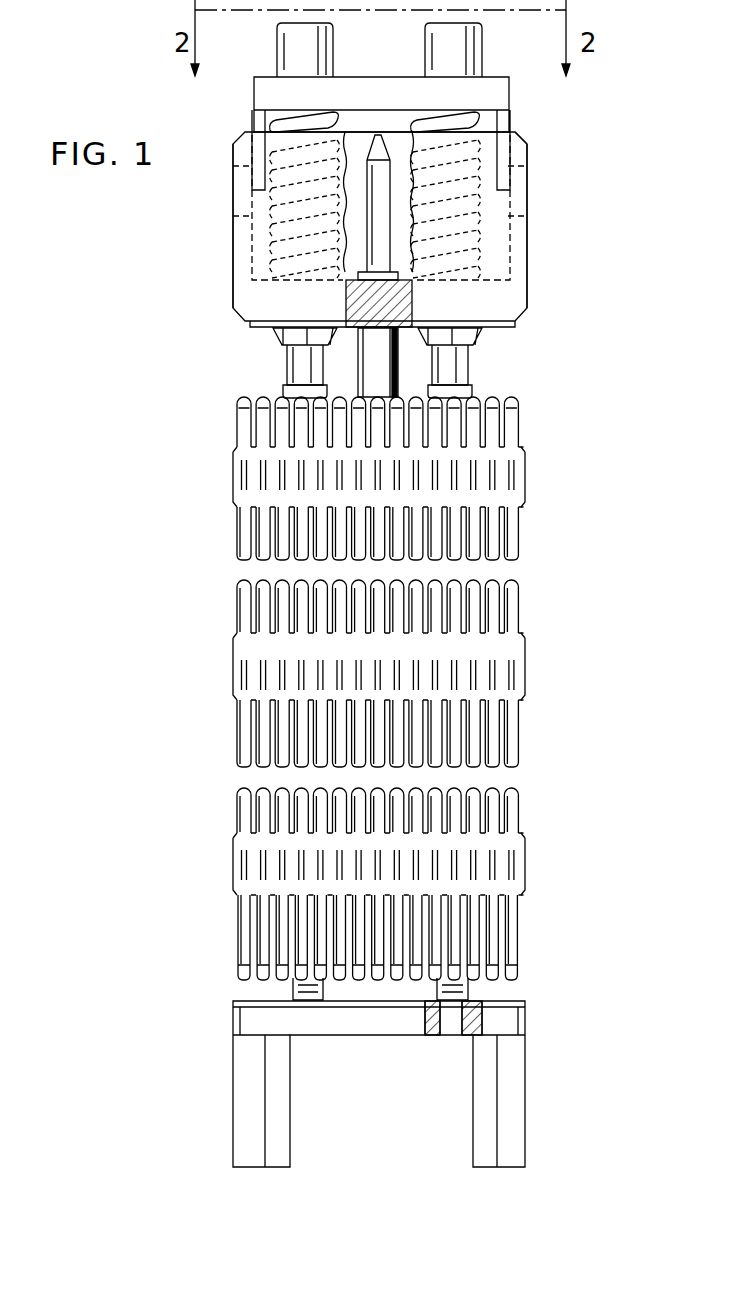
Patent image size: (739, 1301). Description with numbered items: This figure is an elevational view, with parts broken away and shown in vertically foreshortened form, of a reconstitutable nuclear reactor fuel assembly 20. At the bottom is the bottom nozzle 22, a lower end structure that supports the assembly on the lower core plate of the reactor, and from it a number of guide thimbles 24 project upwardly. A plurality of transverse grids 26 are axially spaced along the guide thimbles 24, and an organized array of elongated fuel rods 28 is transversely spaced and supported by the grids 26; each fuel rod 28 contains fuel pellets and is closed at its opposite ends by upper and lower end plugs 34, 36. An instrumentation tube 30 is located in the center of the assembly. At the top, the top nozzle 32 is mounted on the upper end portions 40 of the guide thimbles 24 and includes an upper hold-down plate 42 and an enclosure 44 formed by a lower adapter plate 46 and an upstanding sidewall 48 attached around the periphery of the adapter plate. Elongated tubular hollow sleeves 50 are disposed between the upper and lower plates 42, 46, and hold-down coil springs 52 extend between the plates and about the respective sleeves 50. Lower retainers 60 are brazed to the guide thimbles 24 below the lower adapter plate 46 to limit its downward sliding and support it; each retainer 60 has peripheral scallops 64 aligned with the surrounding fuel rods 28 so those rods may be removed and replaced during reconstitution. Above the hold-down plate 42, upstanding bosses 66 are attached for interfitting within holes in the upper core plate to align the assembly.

The fuel assembly 20 is at (578, 338).
The bottom nozzle 22 is at (527, 1070).
The guide thimbles 24 is at (288, 373).
The transverse grids 26 is at (525, 478).
The fuel rods 28 is at (245, 812).
The instrumentation tube 30 is at (376, 344).
The top nozzle 32 is at (530, 133).
The upper end plugs 34 is at (243, 405).
The lower end plugs 36 is at (245, 967).
The upper end portions 40 is at (288, 358).
The upper hold-down plate 42 is at (512, 104).
The enclosure 44 is at (233, 283).
The lower adapter plate 46 is at (503, 310).
The upstanding sidewall 48 is at (527, 236).
The tubular hollow sleeves 50 is at (272, 237).
The hold-down coil springs 52 is at (276, 125).
The lower retainers 60 is at (276, 333).
The scallops 64 is at (485, 340).
The bosses 66 is at (433, 43).